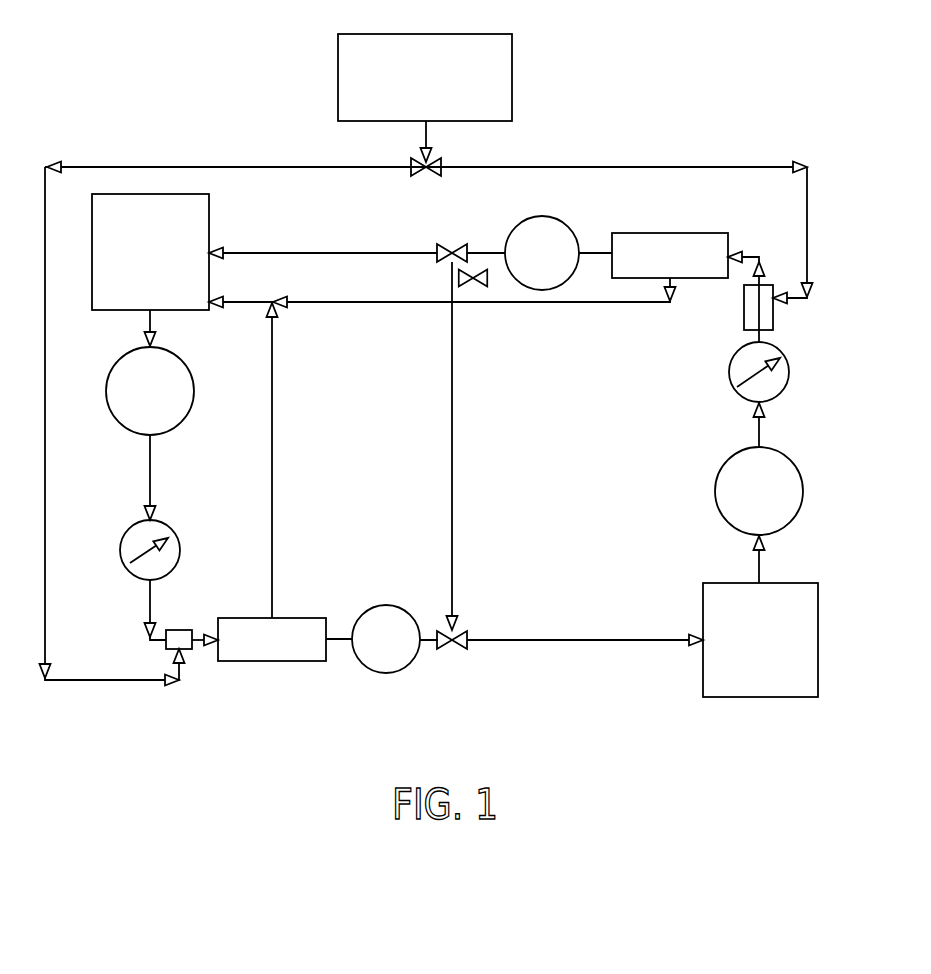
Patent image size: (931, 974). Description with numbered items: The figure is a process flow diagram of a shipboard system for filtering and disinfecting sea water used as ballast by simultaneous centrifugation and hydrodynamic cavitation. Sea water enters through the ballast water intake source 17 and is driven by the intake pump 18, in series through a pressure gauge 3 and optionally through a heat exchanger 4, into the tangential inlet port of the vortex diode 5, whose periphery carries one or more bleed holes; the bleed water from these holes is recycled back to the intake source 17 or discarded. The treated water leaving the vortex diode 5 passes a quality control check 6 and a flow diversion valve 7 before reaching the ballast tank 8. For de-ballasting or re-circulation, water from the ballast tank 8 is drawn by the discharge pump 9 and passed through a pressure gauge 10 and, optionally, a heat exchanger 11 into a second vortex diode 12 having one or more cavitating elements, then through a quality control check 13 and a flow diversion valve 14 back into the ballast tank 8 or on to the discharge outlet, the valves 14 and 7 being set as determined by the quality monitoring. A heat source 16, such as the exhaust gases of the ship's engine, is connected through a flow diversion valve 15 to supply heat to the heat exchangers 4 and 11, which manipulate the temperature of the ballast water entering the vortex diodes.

The pressure gauge 3 is at (139, 550).
The heat exchanger 4 is at (192, 626).
The vortex diode with bleed holes 5 is at (272, 639).
The quality control check 6 is at (386, 639).
The flow diversion valve 7 is at (452, 651).
The ballast tank 8 is at (760, 640).
The discharge pump 9 is at (759, 491).
The pressure gauge 10 is at (741, 372).
The heat exchanger 11 is at (744, 313).
The vortex diode with bleed holes 12 is at (670, 255).
The quality control check 13 is at (542, 253).
The flow diversion valve 14 is at (442, 443).
The flow diversion valve 15 is at (426, 160).
The heat source 16 is at (425, 77).
The ballast water intake source 17 is at (150, 252).
The intake pump 18 is at (150, 372).